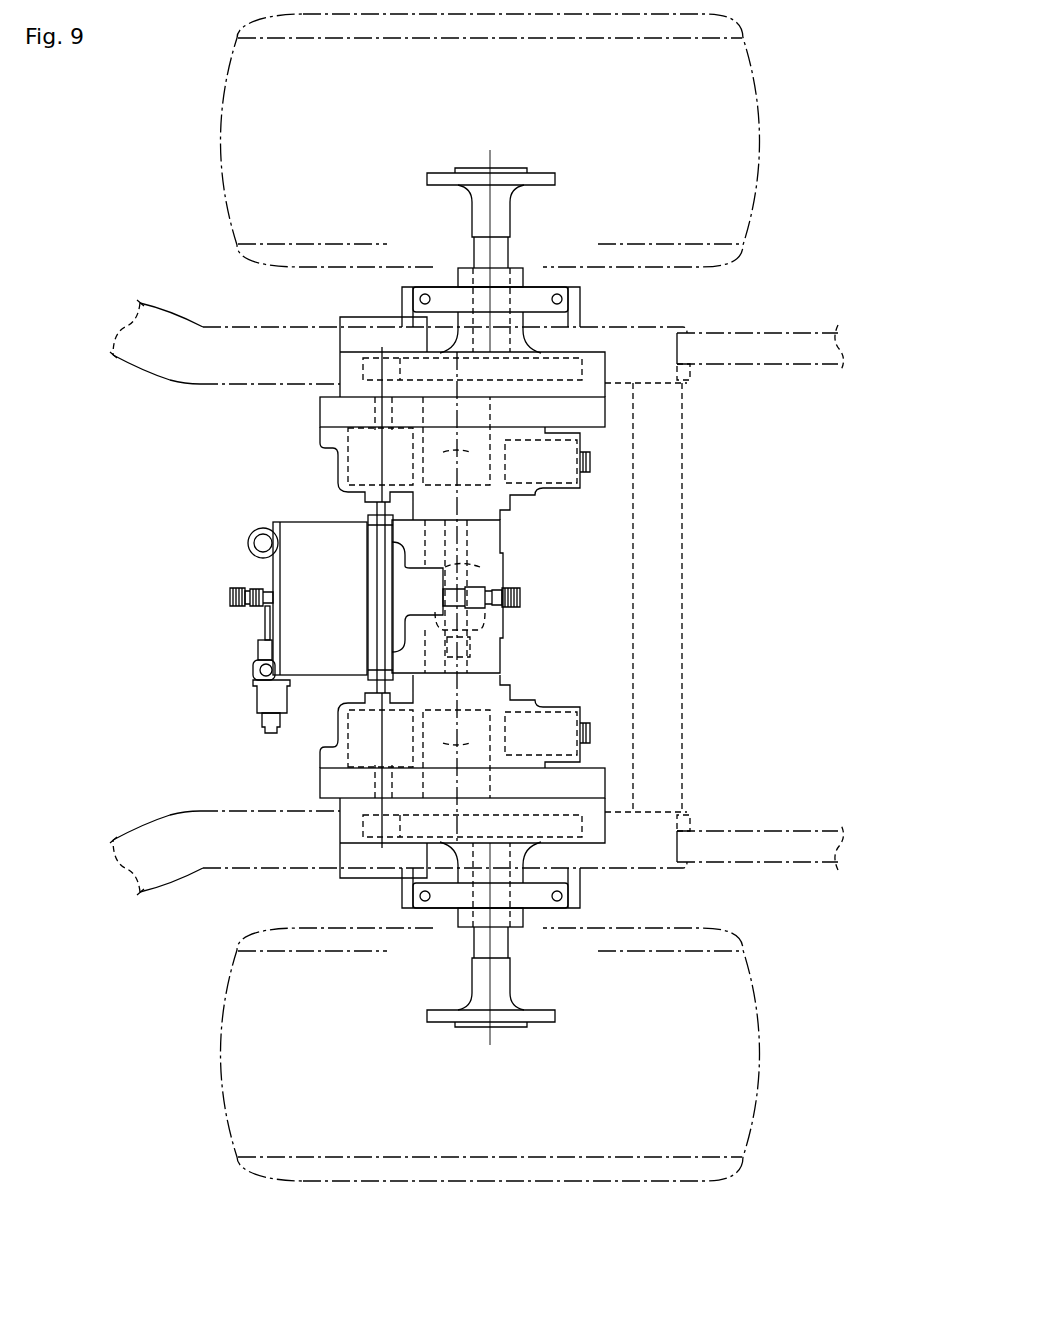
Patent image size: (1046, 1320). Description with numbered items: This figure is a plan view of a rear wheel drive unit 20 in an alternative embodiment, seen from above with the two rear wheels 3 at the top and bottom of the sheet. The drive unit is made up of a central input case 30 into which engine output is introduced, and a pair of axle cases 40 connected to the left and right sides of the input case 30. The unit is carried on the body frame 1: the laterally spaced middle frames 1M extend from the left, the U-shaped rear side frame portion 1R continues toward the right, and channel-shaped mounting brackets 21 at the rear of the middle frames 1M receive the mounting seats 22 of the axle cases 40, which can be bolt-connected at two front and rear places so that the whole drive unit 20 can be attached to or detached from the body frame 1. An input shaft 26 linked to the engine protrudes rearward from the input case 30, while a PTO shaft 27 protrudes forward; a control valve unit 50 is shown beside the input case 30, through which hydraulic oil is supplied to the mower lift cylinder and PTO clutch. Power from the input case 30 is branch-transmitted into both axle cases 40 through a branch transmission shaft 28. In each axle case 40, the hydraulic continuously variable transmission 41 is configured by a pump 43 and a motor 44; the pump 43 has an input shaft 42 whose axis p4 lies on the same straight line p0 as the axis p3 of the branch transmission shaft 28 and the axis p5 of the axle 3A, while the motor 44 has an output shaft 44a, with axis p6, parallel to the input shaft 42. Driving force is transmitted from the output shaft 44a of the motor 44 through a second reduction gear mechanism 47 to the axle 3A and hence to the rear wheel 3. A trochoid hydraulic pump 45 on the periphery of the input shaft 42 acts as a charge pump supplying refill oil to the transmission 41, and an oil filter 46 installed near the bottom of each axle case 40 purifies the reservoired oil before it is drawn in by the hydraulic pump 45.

The body frame 1 is at (477, 596).
The middle frame 1M is at (200, 322).
The rear side frame portion 1R is at (775, 365).
The rear wheel 3 is at (218, 143).
The axle 3A is at (510, 210).
The rear wheel drive unit 20 is at (238, 527).
The mounting bracket 21 is at (585, 300).
The mounting seat 22 is at (448, 290).
The input shaft 26 is at (520, 597).
The PTO shaft 27 is at (230, 597).
The branch transmission shaft 28 is at (503, 648).
The input case 30 is at (292, 520).
The axle case 40 is at (365, 517).
The hydraulic continuously variable transmission 41 is at (321, 436).
The input shaft 42 is at (505, 528).
The pump 43 is at (417, 599).
The motor 44 is at (340, 470).
The output shaft 44a is at (340, 413).
The hydraulic pump 45 is at (465, 405).
The oil filter 46 is at (557, 497).
The second reduction gear mechanism 47 is at (588, 368).
The control valve unit 50 is at (253, 670).
The straight line p0 is at (462, 572).
The axis of branch transmission shaft p3 is at (526, 568).
The axis of input shaft p4 is at (495, 460).
The axis of axle p5 is at (470, 214).
The axis of output shaft p6 is at (365, 362).